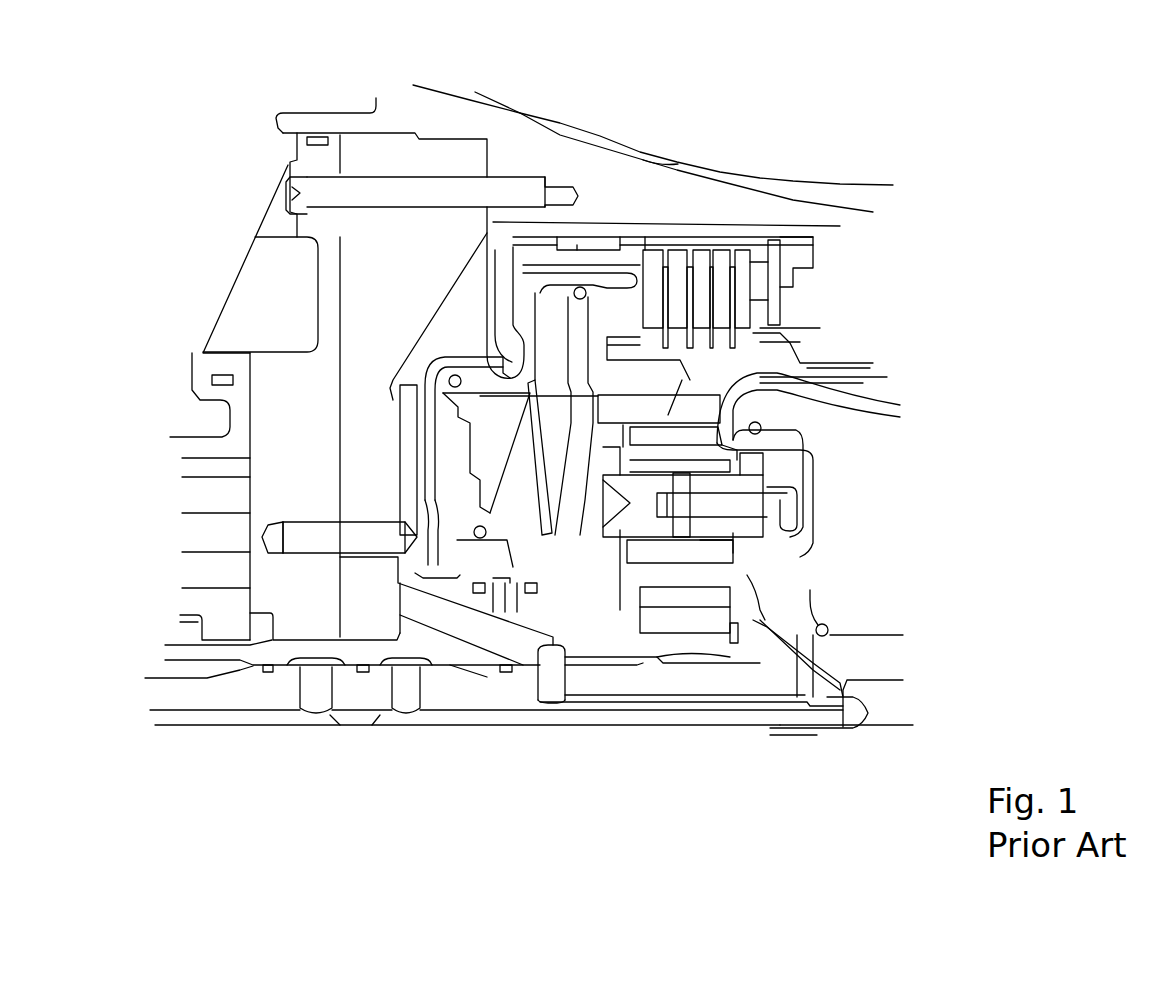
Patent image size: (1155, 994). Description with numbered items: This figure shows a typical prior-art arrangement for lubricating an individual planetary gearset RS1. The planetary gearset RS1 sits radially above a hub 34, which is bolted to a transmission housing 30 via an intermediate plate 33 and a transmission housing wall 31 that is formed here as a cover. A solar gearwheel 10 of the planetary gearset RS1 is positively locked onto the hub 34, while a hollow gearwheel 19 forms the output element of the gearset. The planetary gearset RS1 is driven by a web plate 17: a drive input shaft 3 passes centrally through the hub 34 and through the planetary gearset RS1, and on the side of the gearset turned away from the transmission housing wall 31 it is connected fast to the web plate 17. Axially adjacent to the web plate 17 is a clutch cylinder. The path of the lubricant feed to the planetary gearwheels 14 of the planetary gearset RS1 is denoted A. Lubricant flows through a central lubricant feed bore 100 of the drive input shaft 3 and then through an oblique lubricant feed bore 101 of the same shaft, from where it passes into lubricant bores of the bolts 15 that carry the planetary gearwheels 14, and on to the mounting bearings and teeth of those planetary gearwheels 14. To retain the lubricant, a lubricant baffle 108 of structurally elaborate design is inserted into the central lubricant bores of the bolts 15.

The transmission housing 30 is at (680, 164).
The transmission housing wall 31 is at (317, 240).
The intermediate plate 33 is at (423, 262).
The drive input shaft 3 is at (240, 693).
The central lubricant feed bore 100 is at (430, 717).
The hub 34 is at (455, 652).
The hollow gearwheel 19 is at (770, 324).
The planetary gearwheels 14 is at (700, 368).
The bolts of the planetary gearwheels 15 is at (762, 433).
The lubricant baffle 108 is at (723, 505).
The web plate 17 is at (805, 592).
The oblique lubricant feed bore 101 is at (830, 670).
The solar gearwheel 10 is at (673, 618).
The planetary gearset RS1 is at (710, 733).
The lubricant feed path A is at (815, 735).